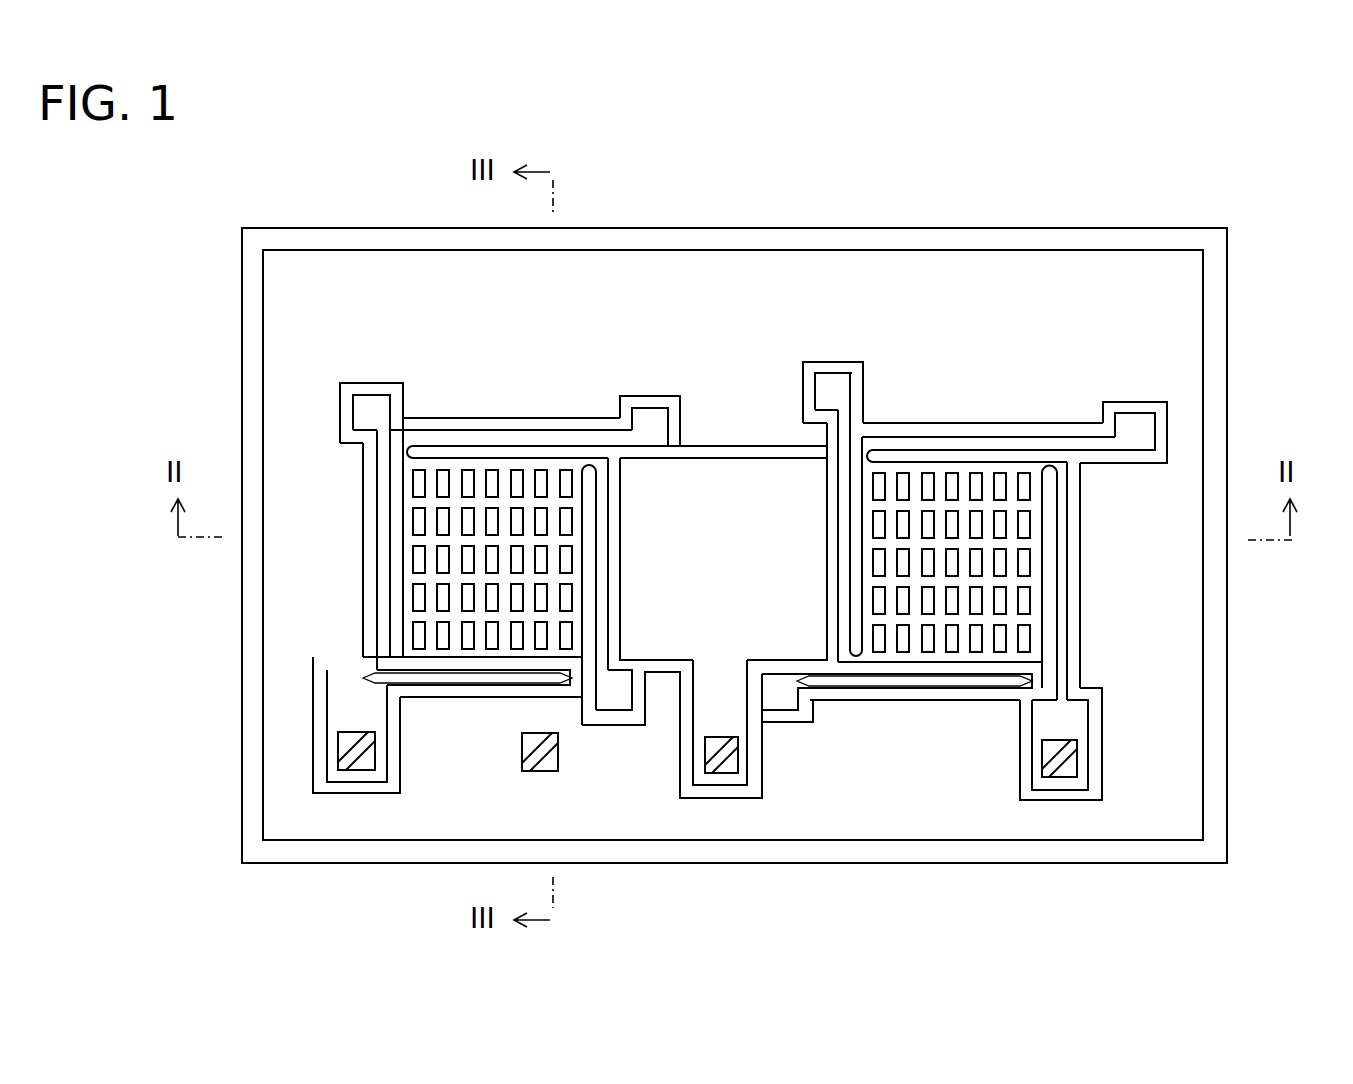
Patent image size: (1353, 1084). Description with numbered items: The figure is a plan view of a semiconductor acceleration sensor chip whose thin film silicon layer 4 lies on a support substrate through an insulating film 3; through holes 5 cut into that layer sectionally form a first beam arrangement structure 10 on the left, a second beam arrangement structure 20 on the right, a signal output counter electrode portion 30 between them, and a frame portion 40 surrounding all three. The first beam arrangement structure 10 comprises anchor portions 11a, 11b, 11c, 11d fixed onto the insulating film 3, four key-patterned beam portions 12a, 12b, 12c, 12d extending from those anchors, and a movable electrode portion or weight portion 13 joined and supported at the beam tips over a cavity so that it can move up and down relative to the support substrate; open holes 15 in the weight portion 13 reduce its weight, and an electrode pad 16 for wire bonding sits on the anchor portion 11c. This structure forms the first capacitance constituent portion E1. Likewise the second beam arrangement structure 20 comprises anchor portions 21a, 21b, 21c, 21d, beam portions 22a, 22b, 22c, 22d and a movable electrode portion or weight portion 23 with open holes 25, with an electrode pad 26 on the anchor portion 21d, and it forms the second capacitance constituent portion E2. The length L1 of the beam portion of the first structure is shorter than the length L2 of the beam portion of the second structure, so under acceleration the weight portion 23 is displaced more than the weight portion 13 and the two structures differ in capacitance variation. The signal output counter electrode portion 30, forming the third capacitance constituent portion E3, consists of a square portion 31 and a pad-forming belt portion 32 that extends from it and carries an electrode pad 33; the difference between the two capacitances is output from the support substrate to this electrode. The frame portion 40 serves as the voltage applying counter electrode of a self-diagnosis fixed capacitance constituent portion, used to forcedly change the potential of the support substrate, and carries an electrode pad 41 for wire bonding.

The insulating film 3 is at (1133, 863).
The thin film silicon layer 4 is at (1084, 841).
The through holes 5 is at (487, 420).
The first beam arrangement structure 10 is at (532, 423).
The anchor portion 11a is at (369, 393).
The anchor portion 11b is at (648, 406).
The anchor portion 11c is at (313, 692).
The anchor portion 11d is at (611, 724).
The beam portion 12a is at (376, 488).
The beam portion 12b is at (585, 428).
The beam portion 12c is at (434, 688).
The beam portion 12d is at (612, 563).
The movable electrode portion (weight portion) 13 is at (441, 455).
The open holes 15 is at (416, 556).
The electrode pad 16 is at (338, 748).
The second beam arrangement structure 20 is at (1021, 426).
The anchor portion 21a is at (830, 373).
The anchor portion 21b is at (1132, 410).
The anchor portion 21c is at (786, 722).
The anchor portion 21d is at (1101, 722).
The beam portion 22a is at (838, 521).
The beam portion 22b is at (1067, 432).
The beam portion 22c is at (845, 690).
The beam portion 22d is at (1080, 614).
The movable electrode portion (weight portion) 23 is at (936, 456).
The open holes 25 is at (876, 560).
The electrode pad 26 is at (1077, 762).
The signal output counter electrode portion 30 is at (774, 452).
The square portion 31 is at (704, 470).
The belt portion 32 is at (683, 703).
The electrode pad 33 is at (740, 762).
The frame portion 40 is at (1204, 308).
The electrode pad 41 is at (537, 772).
The first capacitance constituent portion E1 is at (512, 336).
The second capacitance constituent portion E2 is at (1003, 345).
The third capacitance constituent portion E3 is at (742, 370).
The length of the beam portion L1 is at (478, 688).
The length of the beam portion L2 is at (921, 690).